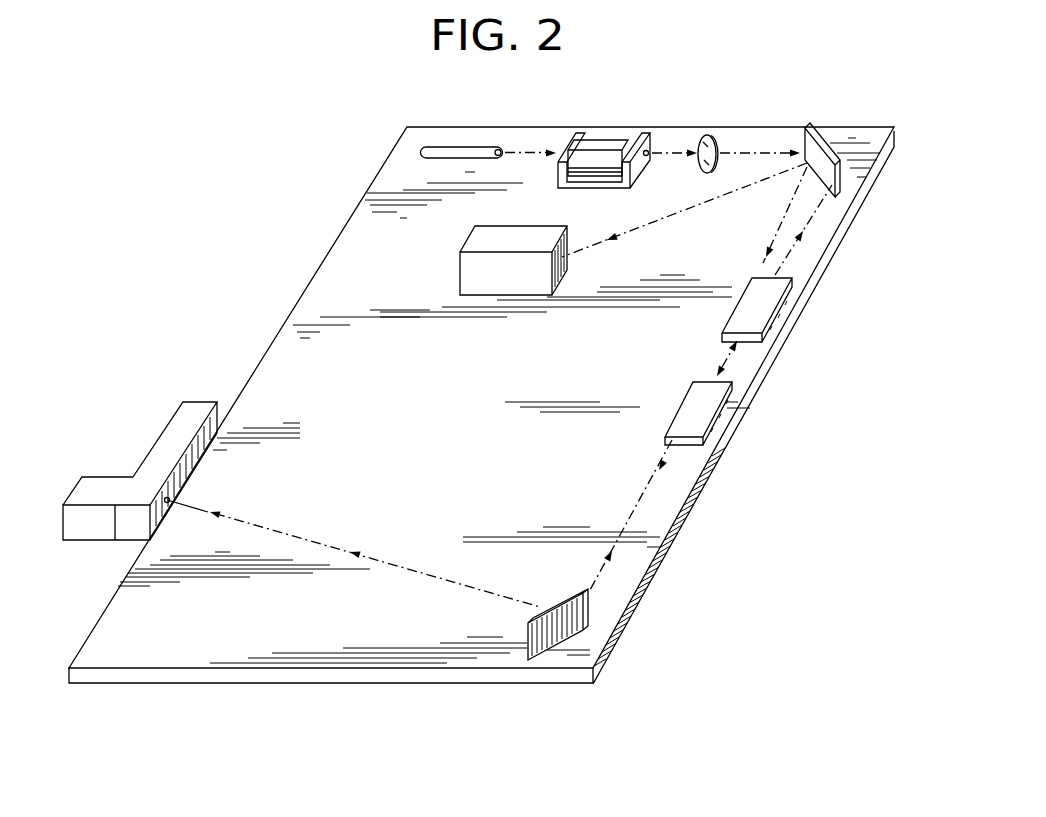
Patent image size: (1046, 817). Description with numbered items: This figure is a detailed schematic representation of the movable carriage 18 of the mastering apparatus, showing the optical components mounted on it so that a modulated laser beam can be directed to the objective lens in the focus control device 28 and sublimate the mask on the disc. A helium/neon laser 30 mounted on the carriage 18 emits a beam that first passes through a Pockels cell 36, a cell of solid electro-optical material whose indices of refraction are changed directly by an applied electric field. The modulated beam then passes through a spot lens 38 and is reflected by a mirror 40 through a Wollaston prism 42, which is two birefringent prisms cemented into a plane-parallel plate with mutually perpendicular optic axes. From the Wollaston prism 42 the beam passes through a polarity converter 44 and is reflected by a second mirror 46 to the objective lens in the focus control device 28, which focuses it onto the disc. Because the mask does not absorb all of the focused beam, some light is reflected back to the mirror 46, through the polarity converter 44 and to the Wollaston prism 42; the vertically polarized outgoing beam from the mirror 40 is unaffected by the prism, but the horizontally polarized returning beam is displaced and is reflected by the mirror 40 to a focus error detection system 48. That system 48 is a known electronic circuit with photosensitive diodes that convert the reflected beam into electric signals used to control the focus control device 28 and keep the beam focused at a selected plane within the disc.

The carriage 18 is at (288, 345).
The focus control device 28 is at (103, 490).
The helium/neon laser 30 is at (420, 150).
The Pockels cell 36 is at (610, 153).
The spot lens 38 is at (717, 147).
The mirror 40 is at (827, 172).
The Wollaston prism 42 is at (757, 315).
The polarity converter 44 is at (703, 428).
The mirror 46 is at (575, 628).
The focus error detection system 48 is at (477, 263).